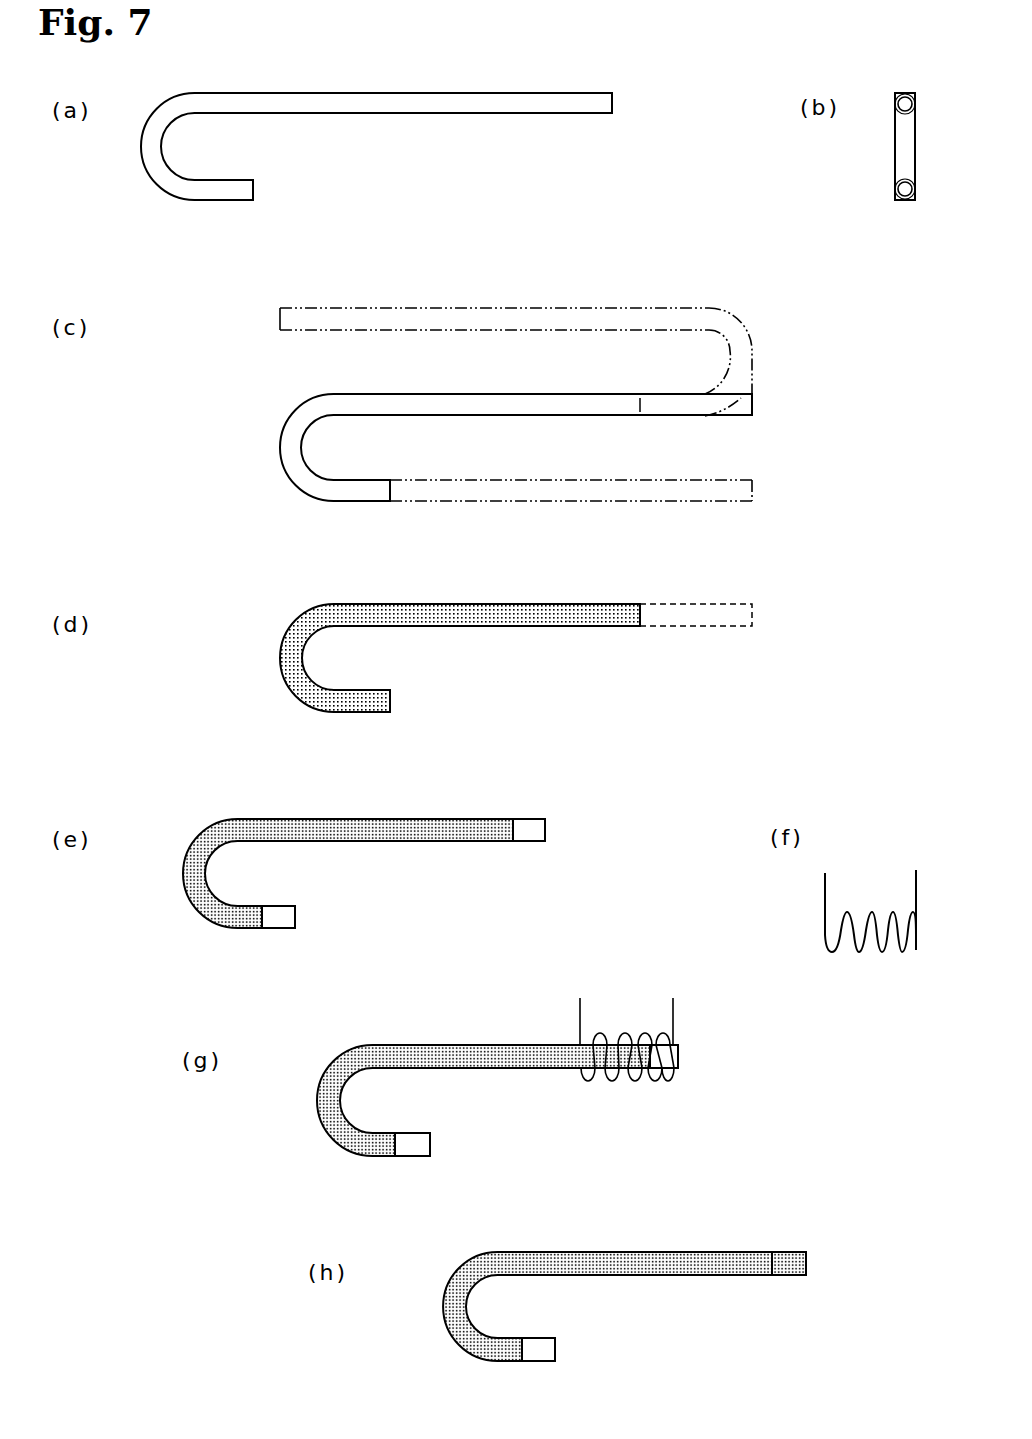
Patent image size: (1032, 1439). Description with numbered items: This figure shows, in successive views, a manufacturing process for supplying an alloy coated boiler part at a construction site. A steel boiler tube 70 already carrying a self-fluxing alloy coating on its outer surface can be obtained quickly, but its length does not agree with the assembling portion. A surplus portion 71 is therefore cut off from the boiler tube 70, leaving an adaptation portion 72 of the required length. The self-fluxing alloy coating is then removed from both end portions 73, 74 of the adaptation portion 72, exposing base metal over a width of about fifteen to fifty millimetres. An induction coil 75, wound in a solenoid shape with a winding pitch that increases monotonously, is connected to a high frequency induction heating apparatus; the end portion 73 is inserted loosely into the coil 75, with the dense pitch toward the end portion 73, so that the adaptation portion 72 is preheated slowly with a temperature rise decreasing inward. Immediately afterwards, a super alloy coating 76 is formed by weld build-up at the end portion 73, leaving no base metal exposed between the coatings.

The boiler tube 70 is at (420, 115).
The surplus portion 71 is at (703, 628).
The adaptation portion 72 is at (530, 628).
The end portion 73 is at (532, 838).
The end portion 74 is at (297, 917).
The induction coil 75 is at (862, 953).
The super alloy coating 76 is at (795, 1277).